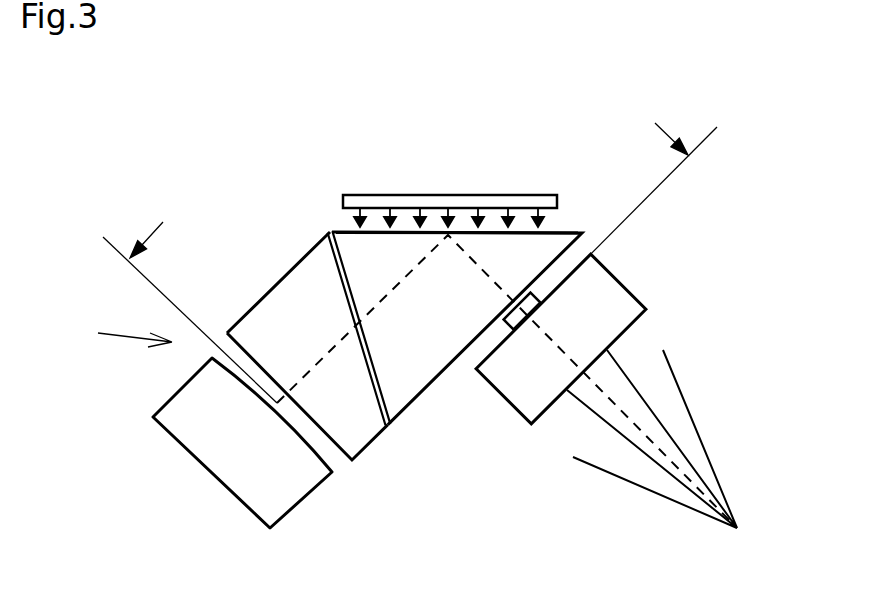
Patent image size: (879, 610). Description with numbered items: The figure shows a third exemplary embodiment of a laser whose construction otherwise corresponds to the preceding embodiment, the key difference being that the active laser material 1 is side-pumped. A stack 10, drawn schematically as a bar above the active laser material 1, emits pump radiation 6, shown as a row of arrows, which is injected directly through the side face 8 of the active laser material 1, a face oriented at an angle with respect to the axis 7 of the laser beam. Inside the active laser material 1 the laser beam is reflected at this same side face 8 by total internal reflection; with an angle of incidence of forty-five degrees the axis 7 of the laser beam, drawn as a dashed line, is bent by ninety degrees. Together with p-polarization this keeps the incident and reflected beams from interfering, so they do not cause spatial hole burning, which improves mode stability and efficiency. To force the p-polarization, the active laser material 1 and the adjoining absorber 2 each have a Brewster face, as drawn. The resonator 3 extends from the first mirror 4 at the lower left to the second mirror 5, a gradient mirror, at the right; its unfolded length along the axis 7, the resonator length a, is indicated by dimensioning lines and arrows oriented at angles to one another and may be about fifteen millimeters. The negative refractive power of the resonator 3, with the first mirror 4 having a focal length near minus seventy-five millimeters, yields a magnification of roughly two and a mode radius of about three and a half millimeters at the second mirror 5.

The active laser material 1 is at (407, 375).
The absorber 2 is at (302, 293).
The resonator 3 is at (123, 334).
The first mirror 4 is at (242, 442).
The second mirror 5 is at (527, 393).
The pump radiation 6 is at (517, 217).
The axis of the laser beam 7 is at (317, 363).
The side face 8 is at (402, 231).
The stack 10 is at (452, 197).
The resonator length a is at (410, 263).